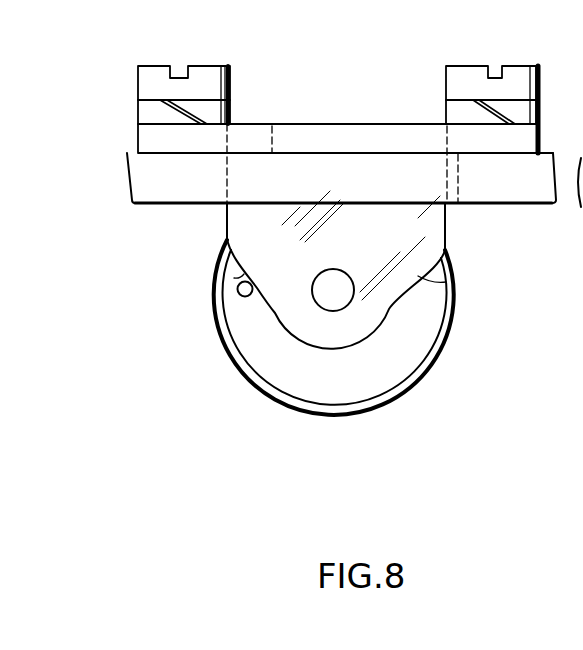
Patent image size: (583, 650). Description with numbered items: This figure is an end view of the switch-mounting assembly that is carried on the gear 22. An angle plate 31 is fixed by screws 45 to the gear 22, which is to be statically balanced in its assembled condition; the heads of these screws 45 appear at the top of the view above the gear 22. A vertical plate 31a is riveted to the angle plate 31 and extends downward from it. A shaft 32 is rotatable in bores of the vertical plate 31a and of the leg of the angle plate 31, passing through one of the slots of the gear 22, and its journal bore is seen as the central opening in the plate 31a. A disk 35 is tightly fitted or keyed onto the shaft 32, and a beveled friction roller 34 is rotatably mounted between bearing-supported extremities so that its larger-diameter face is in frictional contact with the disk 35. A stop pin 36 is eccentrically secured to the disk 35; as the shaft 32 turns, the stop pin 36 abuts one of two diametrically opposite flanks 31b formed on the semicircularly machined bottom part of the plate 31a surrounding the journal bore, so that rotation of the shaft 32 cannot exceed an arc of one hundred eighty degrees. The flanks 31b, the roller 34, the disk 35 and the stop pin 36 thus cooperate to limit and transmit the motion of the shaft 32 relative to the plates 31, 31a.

The screws 45 is at (457, 82).
The angle plate 31 is at (531, 140).
The gear 22 is at (157, 193).
The vertical plate 31a is at (430, 236).
The flanks 31b is at (234, 278).
The shaft 32 is at (333, 276).
The beveled friction roller 34 is at (440, 352).
The disk 35 is at (270, 365).
The stop pin 36 is at (240, 291).